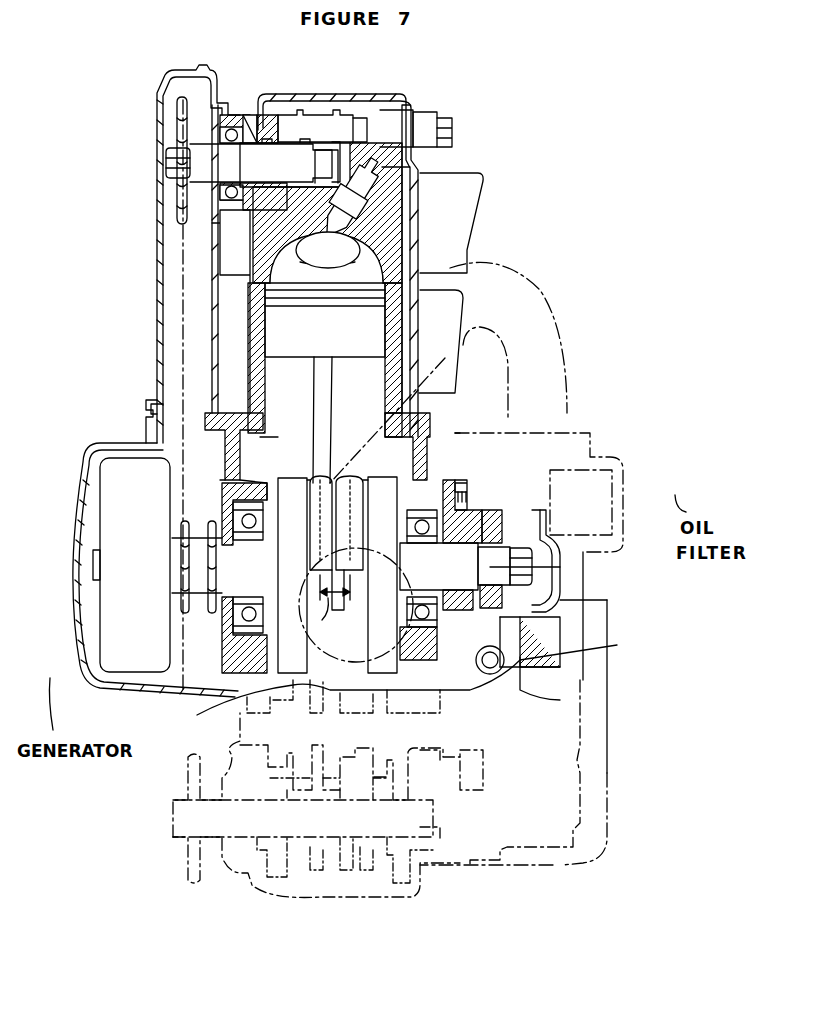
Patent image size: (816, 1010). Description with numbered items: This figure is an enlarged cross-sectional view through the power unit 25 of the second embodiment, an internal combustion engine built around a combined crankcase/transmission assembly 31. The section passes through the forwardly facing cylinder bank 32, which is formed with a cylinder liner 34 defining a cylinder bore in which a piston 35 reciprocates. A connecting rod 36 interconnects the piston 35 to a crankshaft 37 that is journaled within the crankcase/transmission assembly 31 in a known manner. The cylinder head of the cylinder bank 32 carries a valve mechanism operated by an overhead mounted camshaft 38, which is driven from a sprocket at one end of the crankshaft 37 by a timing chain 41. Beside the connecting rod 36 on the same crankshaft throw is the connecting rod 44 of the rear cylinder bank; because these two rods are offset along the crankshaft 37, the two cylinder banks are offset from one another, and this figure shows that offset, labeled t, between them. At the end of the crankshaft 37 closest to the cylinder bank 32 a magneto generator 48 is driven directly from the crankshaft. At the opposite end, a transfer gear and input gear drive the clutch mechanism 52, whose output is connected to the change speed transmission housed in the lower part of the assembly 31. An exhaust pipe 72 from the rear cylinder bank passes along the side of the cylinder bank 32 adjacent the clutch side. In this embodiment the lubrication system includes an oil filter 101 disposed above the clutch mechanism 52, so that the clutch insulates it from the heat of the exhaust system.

The power unit 25 is at (600, 430).
The crankcase/transmission assembly 31 is at (417, 453).
The forward cylinder bank 32 is at (480, 176).
The cylinder liner 34 is at (332, 480).
The piston 35 is at (291, 360).
The connecting rod 36 is at (312, 413).
The crankshaft 37 is at (560, 568).
The camshaft 38 is at (258, 130).
The timing chain 41 is at (183, 314).
The connecting rod 44 is at (348, 605).
The magneto generator 48 is at (118, 617).
The clutch mechanism 52 is at (587, 613).
The exhaust pipe 72 is at (560, 365).
The oil filter 101 is at (612, 488).